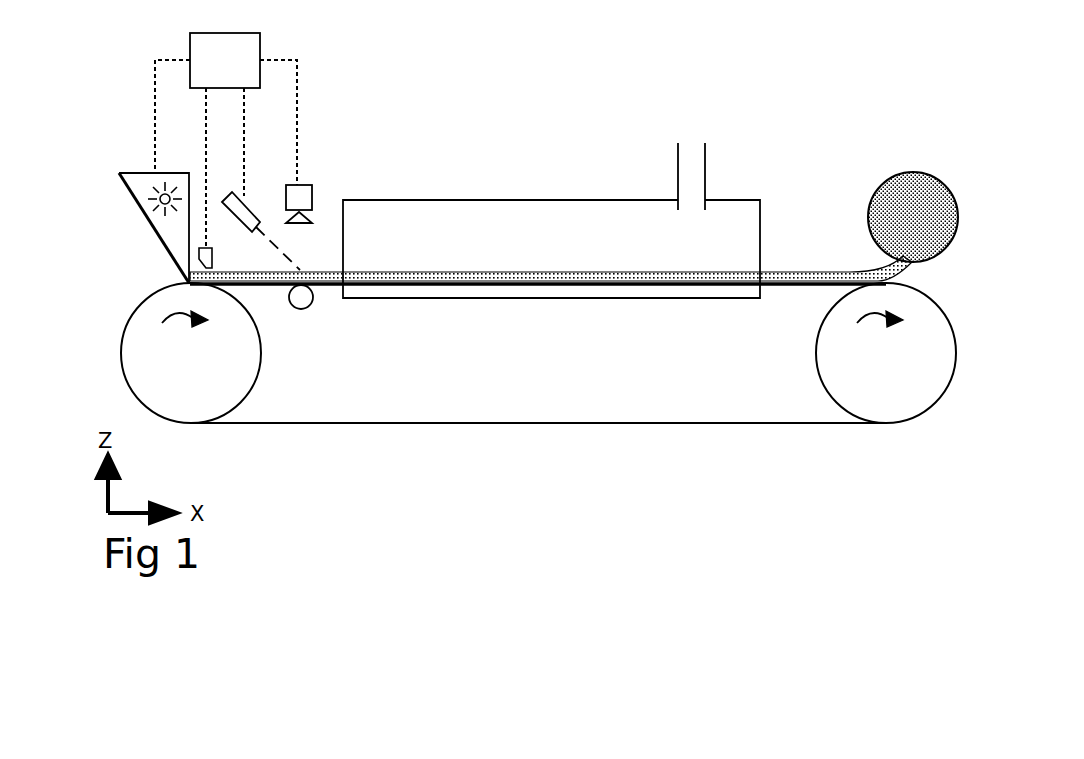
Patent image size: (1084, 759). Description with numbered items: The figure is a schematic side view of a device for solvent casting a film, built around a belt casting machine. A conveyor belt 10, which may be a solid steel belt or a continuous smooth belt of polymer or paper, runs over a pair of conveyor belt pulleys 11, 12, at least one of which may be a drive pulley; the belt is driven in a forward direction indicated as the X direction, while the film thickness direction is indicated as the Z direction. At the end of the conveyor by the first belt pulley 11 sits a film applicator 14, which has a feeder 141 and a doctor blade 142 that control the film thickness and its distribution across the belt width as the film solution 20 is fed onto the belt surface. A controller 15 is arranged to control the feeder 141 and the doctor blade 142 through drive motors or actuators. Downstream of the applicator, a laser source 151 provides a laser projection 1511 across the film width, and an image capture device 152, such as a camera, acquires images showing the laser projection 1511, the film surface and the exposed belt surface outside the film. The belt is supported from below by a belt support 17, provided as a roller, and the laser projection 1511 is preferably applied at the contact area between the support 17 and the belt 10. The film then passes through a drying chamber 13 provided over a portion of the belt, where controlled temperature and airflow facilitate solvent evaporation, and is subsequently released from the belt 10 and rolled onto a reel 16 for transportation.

The conveyor belt 10 is at (457, 423).
The first belt pulley 11 is at (177, 375).
The conveyor belt pulley 12 is at (893, 385).
The drying chamber 13 is at (585, 225).
The film applicator 14 is at (143, 173).
The feeder 141 is at (153, 200).
The doctor blade 142 is at (200, 255).
The controller 15 is at (226, 140).
The laser source 151 is at (238, 207).
The laser projection 1511 is at (277, 250).
The image capture device 152 is at (300, 200).
The reel 16 is at (912, 210).
The belt support 17 is at (305, 308).
The film solution 20 is at (412, 278).